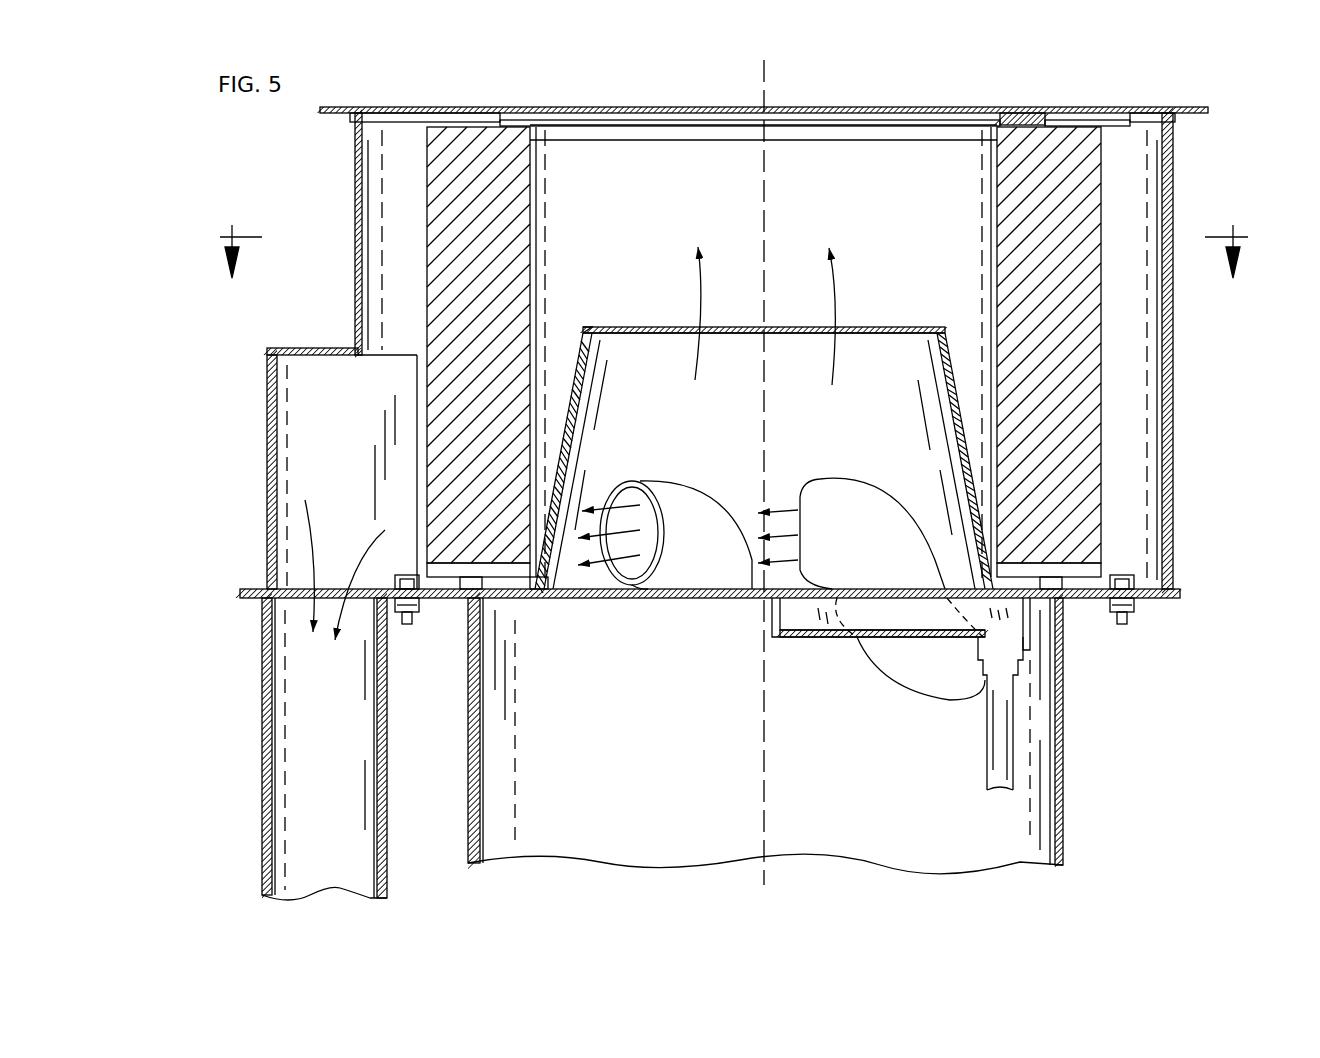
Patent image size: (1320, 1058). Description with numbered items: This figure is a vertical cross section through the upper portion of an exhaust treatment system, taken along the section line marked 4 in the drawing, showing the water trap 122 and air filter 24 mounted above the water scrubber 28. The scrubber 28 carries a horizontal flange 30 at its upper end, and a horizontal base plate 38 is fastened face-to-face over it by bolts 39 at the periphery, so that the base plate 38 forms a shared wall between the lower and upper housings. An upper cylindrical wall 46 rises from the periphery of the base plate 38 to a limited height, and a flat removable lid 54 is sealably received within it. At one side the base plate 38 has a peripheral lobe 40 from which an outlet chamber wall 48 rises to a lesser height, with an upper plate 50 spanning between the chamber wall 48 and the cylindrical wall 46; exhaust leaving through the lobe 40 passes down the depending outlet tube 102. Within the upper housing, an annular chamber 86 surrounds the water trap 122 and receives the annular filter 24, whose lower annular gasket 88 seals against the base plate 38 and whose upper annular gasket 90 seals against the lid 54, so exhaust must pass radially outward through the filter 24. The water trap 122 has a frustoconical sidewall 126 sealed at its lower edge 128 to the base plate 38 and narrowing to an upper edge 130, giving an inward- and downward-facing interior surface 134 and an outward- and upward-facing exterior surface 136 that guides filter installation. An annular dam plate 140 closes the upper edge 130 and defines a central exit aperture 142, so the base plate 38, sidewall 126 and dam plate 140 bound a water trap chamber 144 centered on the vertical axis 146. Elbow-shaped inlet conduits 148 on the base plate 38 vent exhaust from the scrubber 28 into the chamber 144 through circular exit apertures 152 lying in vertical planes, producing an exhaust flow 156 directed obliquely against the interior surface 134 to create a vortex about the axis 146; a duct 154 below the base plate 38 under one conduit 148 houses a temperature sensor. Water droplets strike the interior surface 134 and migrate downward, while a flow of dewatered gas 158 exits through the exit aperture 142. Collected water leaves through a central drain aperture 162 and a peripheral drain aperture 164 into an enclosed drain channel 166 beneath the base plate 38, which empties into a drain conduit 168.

The section line 4- 4 is at (732, 244).
The air filter 24 is at (1102, 290).
The water scrubber 28 is at (1064, 790).
The horizontal flange 30 is at (1062, 606).
The base plate 38 is at (695, 598).
The bolts 39 is at (408, 626).
The peripheral lobe 40 is at (262, 585).
The upper cylindrical wall 46 is at (1174, 382).
The outlet chamber wall 48 is at (267, 467).
The upper plate 50 is at (302, 348).
The removable lid 54 is at (904, 107).
The annular chamber 86 is at (383, 168).
The lower annular gasket 88 is at (1080, 580).
The upper annular gasket 90 is at (1022, 113).
The outlet tube 102 is at (262, 790).
The water trap 122 is at (913, 270).
The frustoconical sidewall 126 is at (582, 333).
The lower edge 128 is at (536, 600).
The upper edge 130 is at (590, 330).
The interior surface 134 is at (586, 370).
The exterior surface 136 is at (572, 405).
The annular dam plate 140 is at (888, 326).
The exit aperture 142 is at (672, 327).
The water trap chamber 144 is at (928, 385).
The vertical axis 146 is at (768, 152).
The inlet conduits 148 is at (686, 481).
The exit aperture 152 is at (632, 490).
The duct 154 is at (918, 700).
The exhaust flow 156 is at (780, 505).
The flow of dewatered gas 158 is at (702, 300).
The central drain aperture 162 is at (793, 600).
The peripheral drain aperture 164 is at (962, 598).
The drain channel 166 is at (838, 640).
The drain conduit 168 is at (987, 732).